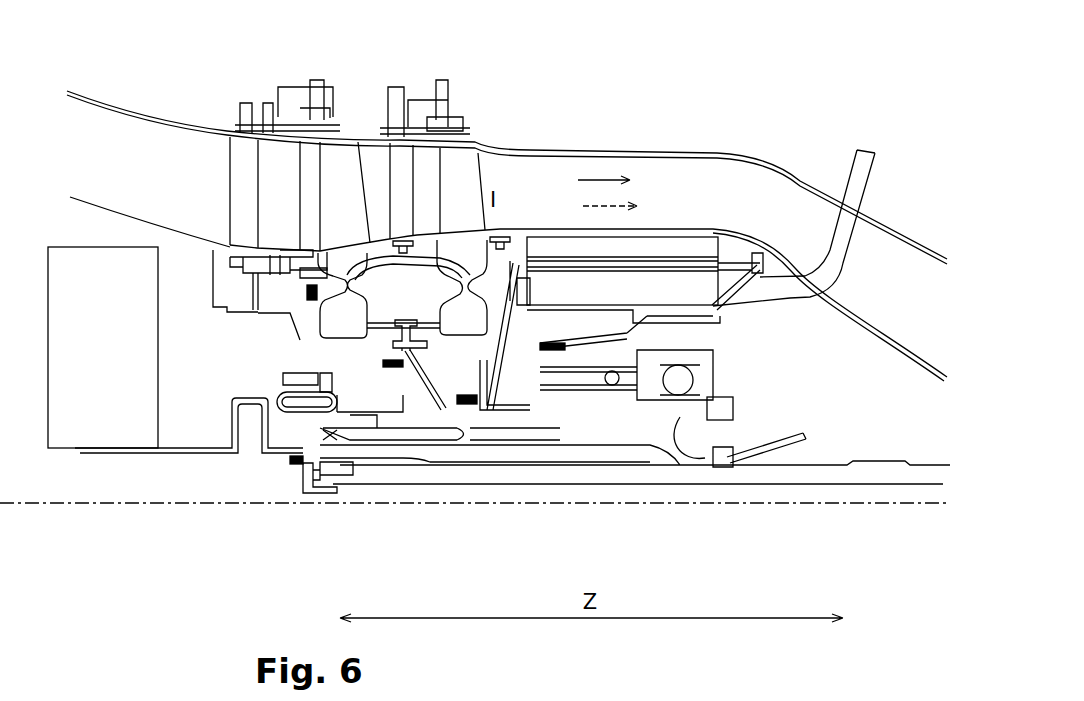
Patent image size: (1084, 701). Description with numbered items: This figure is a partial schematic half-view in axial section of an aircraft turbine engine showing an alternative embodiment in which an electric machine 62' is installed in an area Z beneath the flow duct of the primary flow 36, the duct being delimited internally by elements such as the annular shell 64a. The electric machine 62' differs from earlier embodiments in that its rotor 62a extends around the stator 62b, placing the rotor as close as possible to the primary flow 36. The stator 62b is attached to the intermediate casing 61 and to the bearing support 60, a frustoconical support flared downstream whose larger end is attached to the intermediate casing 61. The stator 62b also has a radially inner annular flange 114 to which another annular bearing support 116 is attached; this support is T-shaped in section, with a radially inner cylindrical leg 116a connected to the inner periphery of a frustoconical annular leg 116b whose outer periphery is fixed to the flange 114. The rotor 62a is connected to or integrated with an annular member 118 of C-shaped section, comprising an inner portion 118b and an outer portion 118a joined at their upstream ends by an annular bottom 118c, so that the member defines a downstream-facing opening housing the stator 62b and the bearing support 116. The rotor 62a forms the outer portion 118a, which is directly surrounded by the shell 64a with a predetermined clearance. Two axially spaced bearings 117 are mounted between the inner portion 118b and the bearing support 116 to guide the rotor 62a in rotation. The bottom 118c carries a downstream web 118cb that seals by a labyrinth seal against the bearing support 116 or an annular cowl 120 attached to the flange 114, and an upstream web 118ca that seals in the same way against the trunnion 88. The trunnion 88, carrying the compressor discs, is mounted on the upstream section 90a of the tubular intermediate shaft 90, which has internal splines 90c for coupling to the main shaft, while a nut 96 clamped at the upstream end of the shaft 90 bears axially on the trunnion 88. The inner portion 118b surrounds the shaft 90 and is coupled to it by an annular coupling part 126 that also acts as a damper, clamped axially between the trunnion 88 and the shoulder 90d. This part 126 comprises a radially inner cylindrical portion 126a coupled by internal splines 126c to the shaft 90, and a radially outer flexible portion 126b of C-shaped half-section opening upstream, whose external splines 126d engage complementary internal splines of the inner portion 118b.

The primary flow 36 is at (600, 178).
The bearing support 60 is at (750, 333).
The intermediate casing 61 is at (895, 205).
The electric machine 62' is at (645, 156).
The rotor 62a is at (578, 245).
The stator 62b is at (735, 230).
The annular shell 64a is at (527, 300).
The trunnion 88 is at (390, 482).
The intermediate shaft 90 is at (613, 448).
The upstream section 90a is at (507, 455).
The internal splines 90c is at (700, 470).
The shoulder 90d is at (707, 470).
The nut 96 is at (323, 440).
The radially inner annular flange 114 is at (660, 252).
The bearing support 116 is at (693, 380).
The radially inner cylindrical leg 116a is at (545, 342).
The frustoconical annular leg 116b is at (600, 335).
The bearings 117 is at (320, 408).
The annular member 118 is at (491, 322).
The outer portion 118a is at (483, 230).
The inner portion 118b is at (447, 420).
The annular bottom 118c is at (415, 240).
The annular web 118ca is at (427, 398).
The annular web 118cb is at (487, 328).
The annular cowl 120 is at (697, 283).
The annular coupling part 126 is at (535, 440).
The radially inner cylindrical portion 126a is at (640, 455).
The radially outer flexible portion 126b is at (586, 440).
The internal splines 126c is at (560, 440).
The external splines 126d is at (495, 440).